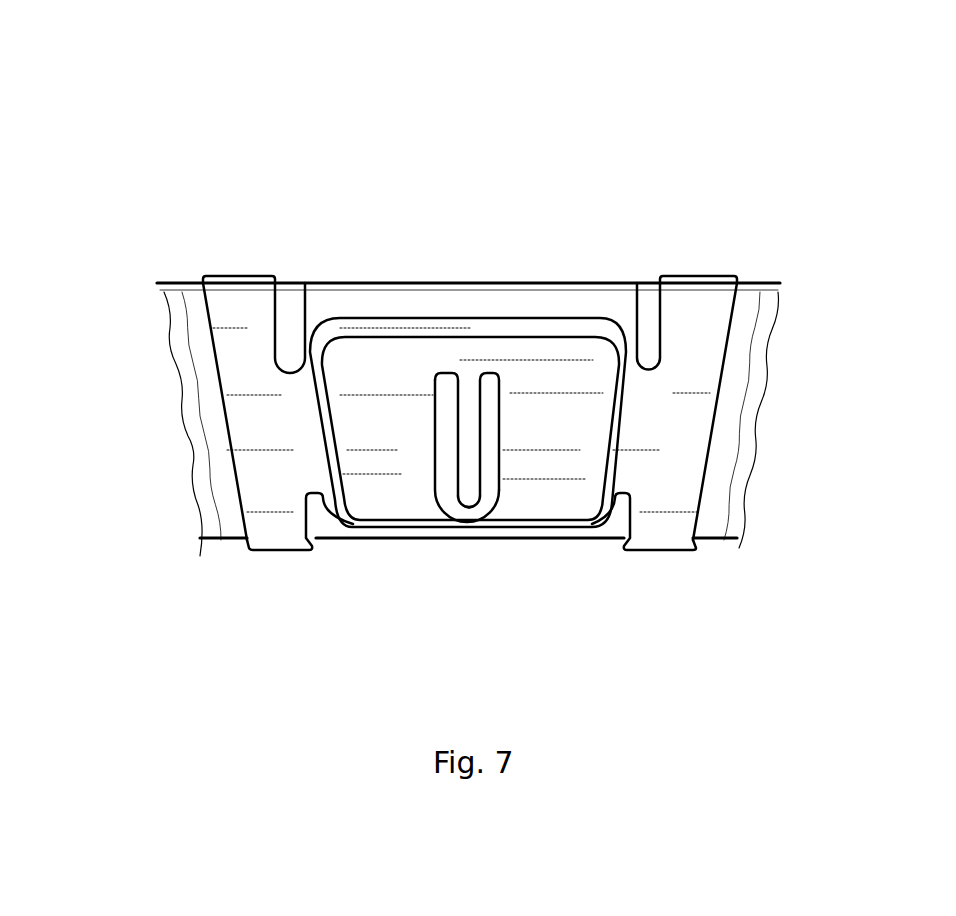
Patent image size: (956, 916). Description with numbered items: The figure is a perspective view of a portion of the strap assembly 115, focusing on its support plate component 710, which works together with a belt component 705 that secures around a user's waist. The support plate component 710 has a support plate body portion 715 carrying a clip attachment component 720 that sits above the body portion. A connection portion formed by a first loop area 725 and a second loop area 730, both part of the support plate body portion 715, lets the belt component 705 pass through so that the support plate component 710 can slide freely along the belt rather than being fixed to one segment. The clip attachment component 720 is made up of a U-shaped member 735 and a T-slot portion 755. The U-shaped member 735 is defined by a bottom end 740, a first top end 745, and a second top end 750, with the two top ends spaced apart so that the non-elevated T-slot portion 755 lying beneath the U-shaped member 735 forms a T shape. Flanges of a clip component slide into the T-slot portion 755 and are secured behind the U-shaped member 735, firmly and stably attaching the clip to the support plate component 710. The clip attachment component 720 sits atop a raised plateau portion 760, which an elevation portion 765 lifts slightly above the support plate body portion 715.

The strap assembly 115 is at (146, 85).
The belt component 705 is at (720, 540).
The support plate component 710 is at (686, 272).
The support plate body portion 715 is at (340, 326).
The clip attachment component 720 is at (424, 446).
The first loop area 725 is at (275, 537).
The second loop area 730 is at (662, 530).
The U-shaped member 735 is at (455, 512).
The bottom end 740 is at (472, 522).
The first top end 745 is at (443, 390).
The second top end 750 is at (494, 387).
The T-slot portion 755 is at (471, 467).
The raised plateau portion 760 is at (376, 377).
The elevation portion 765 is at (332, 355).